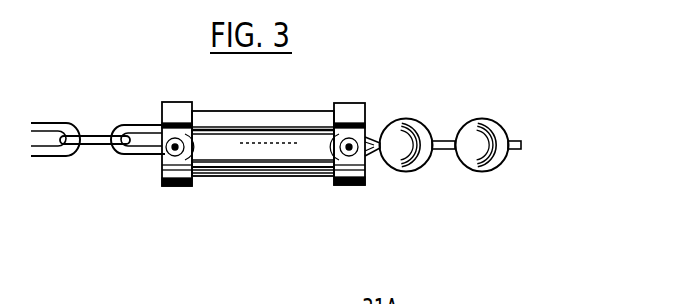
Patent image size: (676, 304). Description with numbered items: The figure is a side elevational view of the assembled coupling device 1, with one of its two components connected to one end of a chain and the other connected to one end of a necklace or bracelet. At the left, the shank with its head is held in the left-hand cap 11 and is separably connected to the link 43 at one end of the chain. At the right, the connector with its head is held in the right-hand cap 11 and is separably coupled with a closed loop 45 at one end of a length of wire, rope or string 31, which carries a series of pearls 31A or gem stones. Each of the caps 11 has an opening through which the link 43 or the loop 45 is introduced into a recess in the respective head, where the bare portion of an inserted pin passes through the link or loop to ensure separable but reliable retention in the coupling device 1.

The coupling device 1 is at (238, 229).
The cap 11 is at (172, 103).
The link 43 is at (143, 162).
The closed loop 45 is at (368, 157).
The string 31 is at (447, 152).
The pearl 31A is at (475, 138).